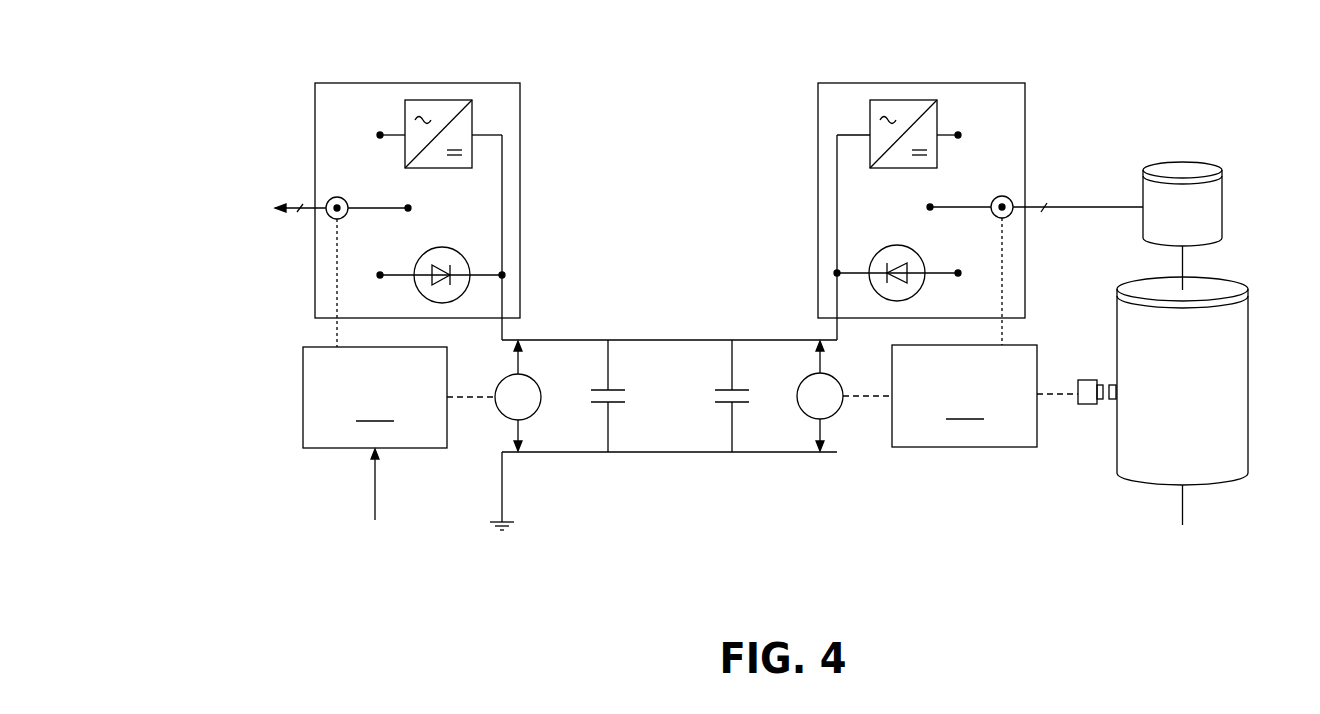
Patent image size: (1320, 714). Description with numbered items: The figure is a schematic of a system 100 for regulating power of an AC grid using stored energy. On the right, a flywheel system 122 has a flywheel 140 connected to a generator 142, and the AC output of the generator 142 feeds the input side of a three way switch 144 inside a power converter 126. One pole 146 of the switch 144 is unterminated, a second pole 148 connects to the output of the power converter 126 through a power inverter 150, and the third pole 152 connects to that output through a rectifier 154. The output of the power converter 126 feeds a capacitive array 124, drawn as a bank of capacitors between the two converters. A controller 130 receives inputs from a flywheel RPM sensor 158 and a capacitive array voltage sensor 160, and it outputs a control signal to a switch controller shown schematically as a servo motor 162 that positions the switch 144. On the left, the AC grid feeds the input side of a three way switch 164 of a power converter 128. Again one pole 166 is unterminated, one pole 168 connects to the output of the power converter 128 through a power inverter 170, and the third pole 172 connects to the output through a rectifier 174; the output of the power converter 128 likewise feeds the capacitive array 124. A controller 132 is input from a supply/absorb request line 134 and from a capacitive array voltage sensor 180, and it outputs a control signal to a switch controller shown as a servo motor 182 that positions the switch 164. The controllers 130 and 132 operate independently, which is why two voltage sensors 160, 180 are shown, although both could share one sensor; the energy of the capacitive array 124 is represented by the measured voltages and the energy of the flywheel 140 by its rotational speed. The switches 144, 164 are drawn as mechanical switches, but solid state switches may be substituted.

The system 100 is at (676, 511).
The flywheel system 122 is at (1079, 476).
The capacitive array 124 is at (671, 312).
The power converter 126 is at (928, 83).
The power converter 128 is at (418, 83).
The controller 130 is at (960, 396).
The controller 132 is at (399, 397).
The supply/absorb request line 134 is at (375, 478).
The flywheel 140 is at (1248, 378).
The generator 142 is at (1183, 162).
The three way switch 144 is at (969, 212).
The pole 146 is at (930, 207).
The pole 148 is at (958, 134).
The power inverter 150 is at (879, 170).
The pole 152 is at (958, 279).
The rectifier 154 is at (896, 245).
The flywheel RPM sensor 158 is at (1088, 406).
The capacitive array voltage sensor 160 is at (841, 385).
The servo motor 162 is at (1001, 196).
The three way switch 164 is at (366, 213).
The pole 166 is at (408, 207).
The pole 168 is at (380, 134).
The power inverter 170 is at (461, 169).
The pole 172 is at (381, 279).
The rectifier 174 is at (442, 247).
The capacitive array voltage sensor 180 is at (502, 381).
The servo motor 182 is at (339, 196).